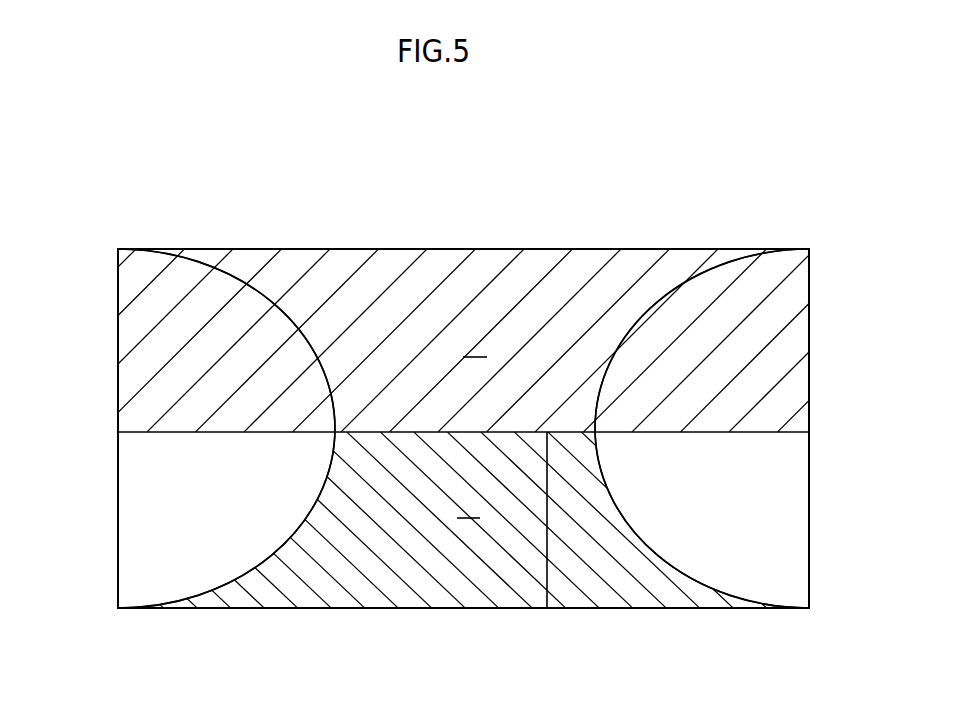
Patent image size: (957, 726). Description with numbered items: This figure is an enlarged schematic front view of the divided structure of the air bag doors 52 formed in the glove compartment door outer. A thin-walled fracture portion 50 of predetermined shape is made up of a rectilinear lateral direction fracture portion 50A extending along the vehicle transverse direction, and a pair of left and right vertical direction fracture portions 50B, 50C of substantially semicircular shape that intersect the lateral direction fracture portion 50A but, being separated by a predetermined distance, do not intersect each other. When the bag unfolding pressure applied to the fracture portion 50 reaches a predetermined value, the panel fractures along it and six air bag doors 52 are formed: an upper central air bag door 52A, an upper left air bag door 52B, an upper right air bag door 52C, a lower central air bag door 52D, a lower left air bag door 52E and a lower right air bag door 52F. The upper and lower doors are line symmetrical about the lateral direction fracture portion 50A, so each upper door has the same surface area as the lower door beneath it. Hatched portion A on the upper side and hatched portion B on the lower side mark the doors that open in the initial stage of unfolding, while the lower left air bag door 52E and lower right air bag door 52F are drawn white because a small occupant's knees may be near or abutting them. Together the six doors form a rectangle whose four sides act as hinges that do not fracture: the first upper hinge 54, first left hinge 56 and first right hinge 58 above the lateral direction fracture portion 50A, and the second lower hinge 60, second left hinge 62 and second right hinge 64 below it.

The fracture portion 50 is at (463, 476).
The lateral direction fracture portion 50A is at (547, 608).
The vertical direction fracture portion 50B is at (273, 553).
The vertical direction fracture portion 50C is at (697, 588).
The air bag doors 52 is at (648, 202).
The upper central air bag door 52A is at (492, 270).
The upper left air bag door 52B is at (222, 287).
The upper right air bag door 52C is at (742, 282).
The lower central air bag door 52D is at (505, 593).
The lower left air bag door 52E is at (227, 547).
The lower right air bag door 52F is at (773, 572).
The first upper hinge 54 is at (588, 248).
The first left hinge 56 is at (118, 382).
The first right hinge 58 is at (809, 390).
The second lower hinge 60 is at (425, 609).
The second left hinge 62 is at (118, 506).
The second right hinge 64 is at (809, 513).